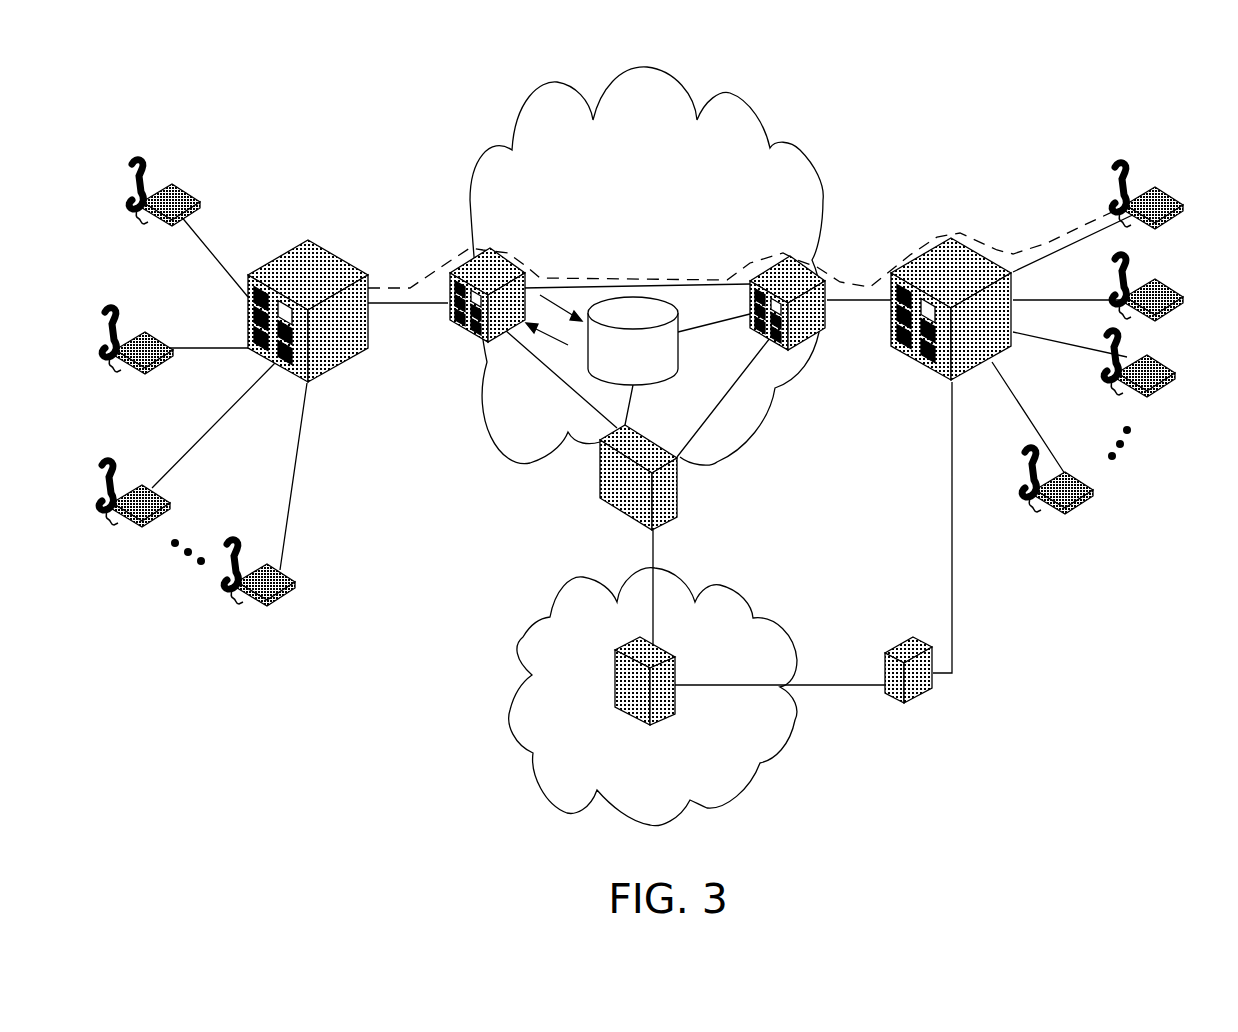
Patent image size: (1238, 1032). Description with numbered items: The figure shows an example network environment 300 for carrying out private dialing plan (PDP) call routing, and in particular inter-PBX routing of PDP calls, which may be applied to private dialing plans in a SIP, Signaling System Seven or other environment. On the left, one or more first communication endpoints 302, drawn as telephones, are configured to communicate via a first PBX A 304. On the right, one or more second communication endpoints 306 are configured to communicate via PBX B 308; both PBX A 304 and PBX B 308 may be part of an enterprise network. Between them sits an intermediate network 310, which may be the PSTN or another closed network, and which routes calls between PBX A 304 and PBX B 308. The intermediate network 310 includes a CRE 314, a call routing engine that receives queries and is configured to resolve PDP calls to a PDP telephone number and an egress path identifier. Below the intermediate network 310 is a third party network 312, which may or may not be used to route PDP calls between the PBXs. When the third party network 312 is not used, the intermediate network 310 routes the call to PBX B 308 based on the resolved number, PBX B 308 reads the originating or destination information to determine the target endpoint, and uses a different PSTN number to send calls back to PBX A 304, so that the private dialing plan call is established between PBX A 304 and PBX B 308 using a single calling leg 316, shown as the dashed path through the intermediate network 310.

The network environment 300 is at (315, 125).
The first communication endpoints 302 is at (296, 575).
The PBX A 304 is at (331, 252).
The second communication endpoints 306 is at (1170, 193).
The PBX B 308 is at (917, 365).
The intermediate network 310 is at (622, 198).
The third party network 312 is at (632, 803).
The CRE 314 is at (620, 378).
The single calling leg 316 is at (850, 284).